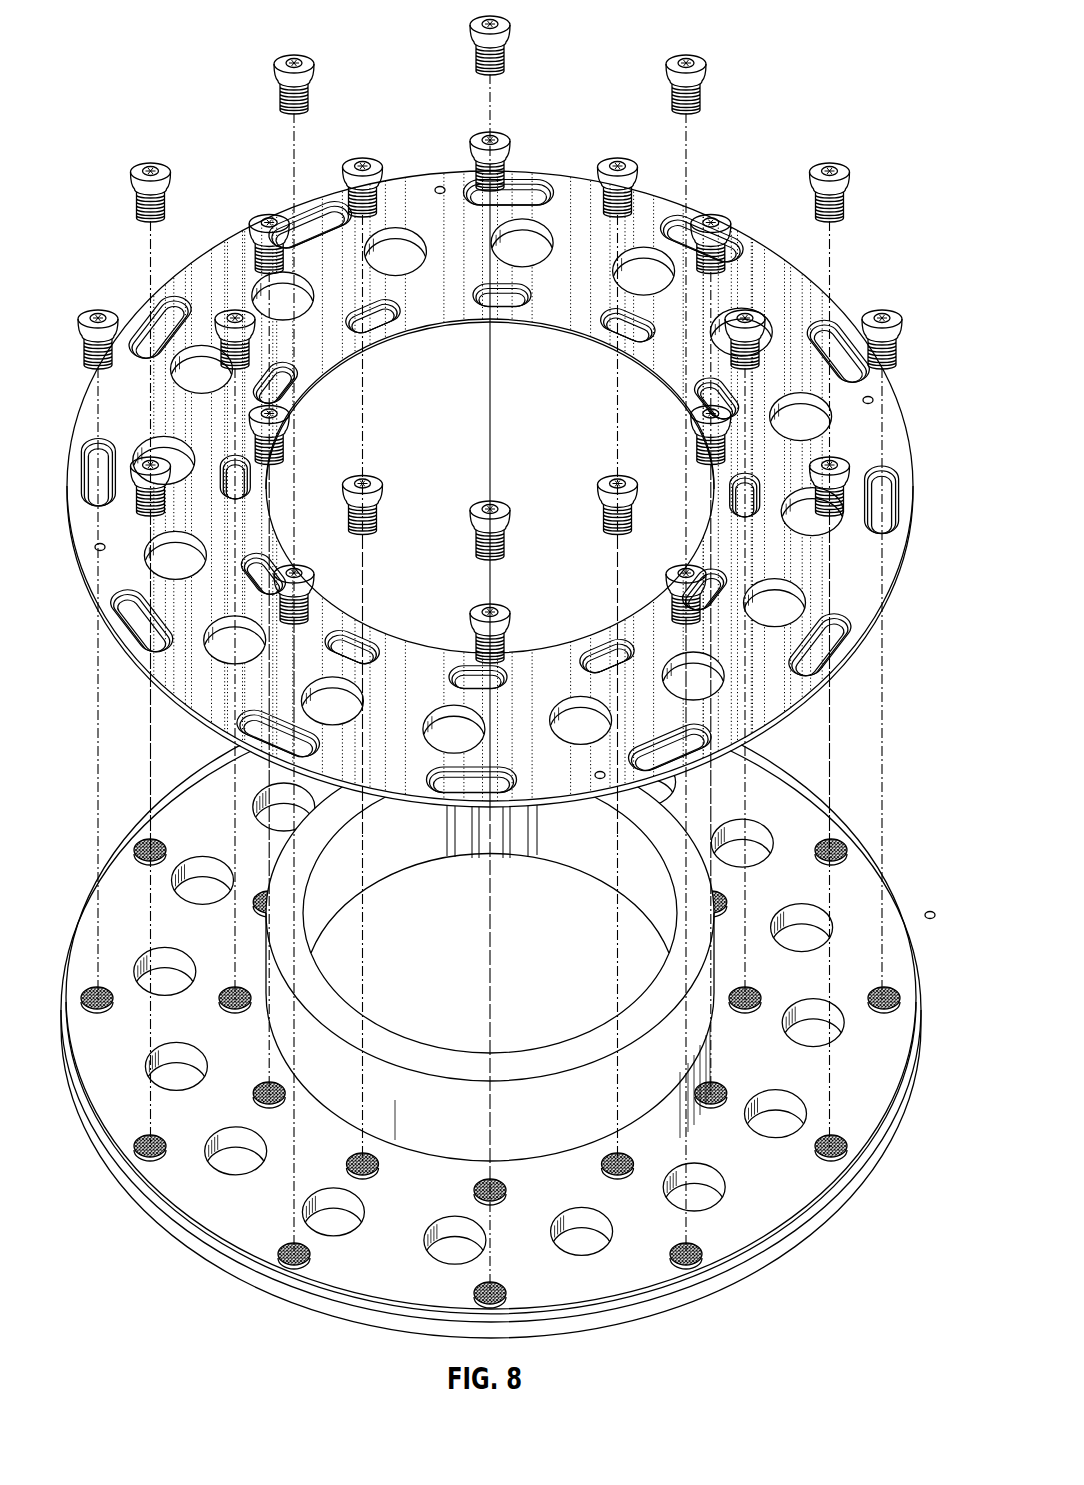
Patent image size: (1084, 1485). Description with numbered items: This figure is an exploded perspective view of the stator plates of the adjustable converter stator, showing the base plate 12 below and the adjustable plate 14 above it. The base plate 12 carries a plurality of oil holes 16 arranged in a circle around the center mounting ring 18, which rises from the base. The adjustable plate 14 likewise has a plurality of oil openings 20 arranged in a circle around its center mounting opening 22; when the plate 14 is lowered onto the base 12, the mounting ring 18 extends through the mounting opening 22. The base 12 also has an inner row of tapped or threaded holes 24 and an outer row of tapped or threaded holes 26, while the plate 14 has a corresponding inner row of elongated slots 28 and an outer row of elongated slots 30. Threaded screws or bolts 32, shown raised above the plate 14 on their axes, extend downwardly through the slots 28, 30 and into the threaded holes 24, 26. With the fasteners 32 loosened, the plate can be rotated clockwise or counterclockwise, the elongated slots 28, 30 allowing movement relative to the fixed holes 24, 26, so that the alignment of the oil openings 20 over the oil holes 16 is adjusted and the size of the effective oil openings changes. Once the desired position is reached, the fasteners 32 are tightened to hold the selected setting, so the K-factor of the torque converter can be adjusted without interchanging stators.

The base plate 12 is at (906, 948).
The adjustable plate 14 is at (878, 593).
The oil holes 16 is at (806, 1042).
The center mounting ring 18 is at (535, 1068).
The oil openings 20 is at (824, 432).
The center mounting opening 22 is at (275, 528).
The inner row of threaded holes 24 is at (753, 992).
The outer row of threaded holes 26 is at (836, 843).
The inner row of elongated slots 28 is at (364, 644).
The outer row of elongated slots 30 is at (130, 604).
The threaded screws or bolts 32 is at (708, 66).